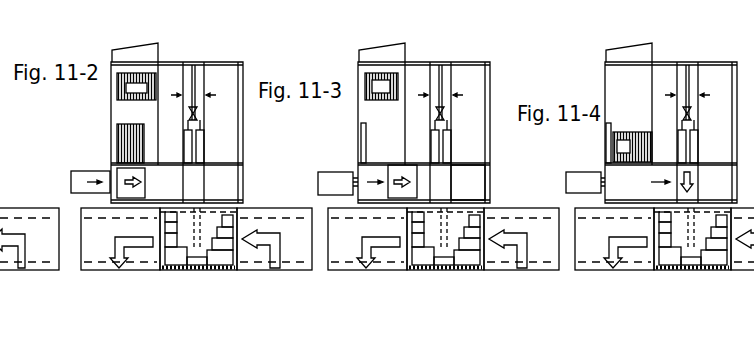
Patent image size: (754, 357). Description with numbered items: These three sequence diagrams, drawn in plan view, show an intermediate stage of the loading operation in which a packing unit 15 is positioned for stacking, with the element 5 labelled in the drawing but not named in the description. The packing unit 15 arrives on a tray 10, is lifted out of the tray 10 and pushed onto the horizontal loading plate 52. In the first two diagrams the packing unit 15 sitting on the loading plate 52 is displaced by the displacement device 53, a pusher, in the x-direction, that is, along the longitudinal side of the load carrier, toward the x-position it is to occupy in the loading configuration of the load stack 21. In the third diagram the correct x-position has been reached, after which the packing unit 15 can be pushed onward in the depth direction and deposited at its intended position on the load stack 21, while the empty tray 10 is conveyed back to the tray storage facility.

In FIG. 11-3, the machine tool 5 is at (466, 114).
In FIG. 11-3, the tray 10 is at (349, 71).
In FIG. 11-2, the packing unit 15 is at (101, 165).
In FIG. 11-3, the load stack 21 is at (446, 266).
In FIG. 11-3, the loading plate 52 is at (494, 171).
In FIG. 11-3, the displacement device (pusher) 53 is at (360, 165).